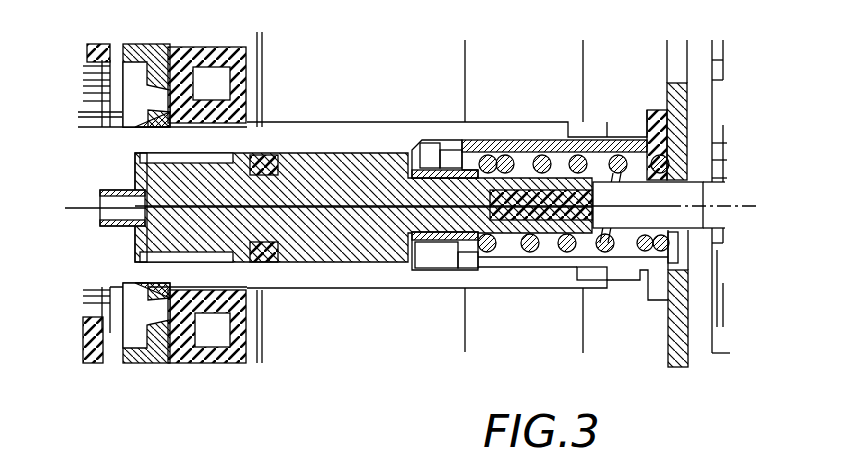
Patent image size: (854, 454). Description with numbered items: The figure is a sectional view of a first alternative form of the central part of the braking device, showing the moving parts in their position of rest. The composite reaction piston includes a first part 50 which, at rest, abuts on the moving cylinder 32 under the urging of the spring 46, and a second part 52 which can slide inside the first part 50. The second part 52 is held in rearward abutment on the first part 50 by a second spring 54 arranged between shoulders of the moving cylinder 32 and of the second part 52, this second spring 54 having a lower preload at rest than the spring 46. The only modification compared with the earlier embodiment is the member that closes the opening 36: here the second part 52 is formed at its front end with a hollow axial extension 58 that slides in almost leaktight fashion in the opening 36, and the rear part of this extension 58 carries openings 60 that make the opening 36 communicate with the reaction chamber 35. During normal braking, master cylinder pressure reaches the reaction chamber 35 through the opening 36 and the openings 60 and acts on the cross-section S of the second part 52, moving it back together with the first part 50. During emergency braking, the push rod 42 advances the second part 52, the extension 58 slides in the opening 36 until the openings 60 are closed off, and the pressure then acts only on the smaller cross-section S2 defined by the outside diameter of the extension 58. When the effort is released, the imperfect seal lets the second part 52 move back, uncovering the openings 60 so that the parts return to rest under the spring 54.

The moving cylinder 32 is at (392, 272).
The reaction chamber 35 is at (160, 263).
The opening 36 is at (100, 212).
The push rod 42 is at (683, 193).
The spring 46 is at (522, 250).
The first part 50 is at (435, 170).
The second part 52 is at (322, 176).
The second spring 54 is at (203, 257).
The hollow axial extension 58 is at (121, 190).
The openings 60 is at (139, 176).
The cross-section S is at (307, 33).
The cross-section S2 is at (120, 227).